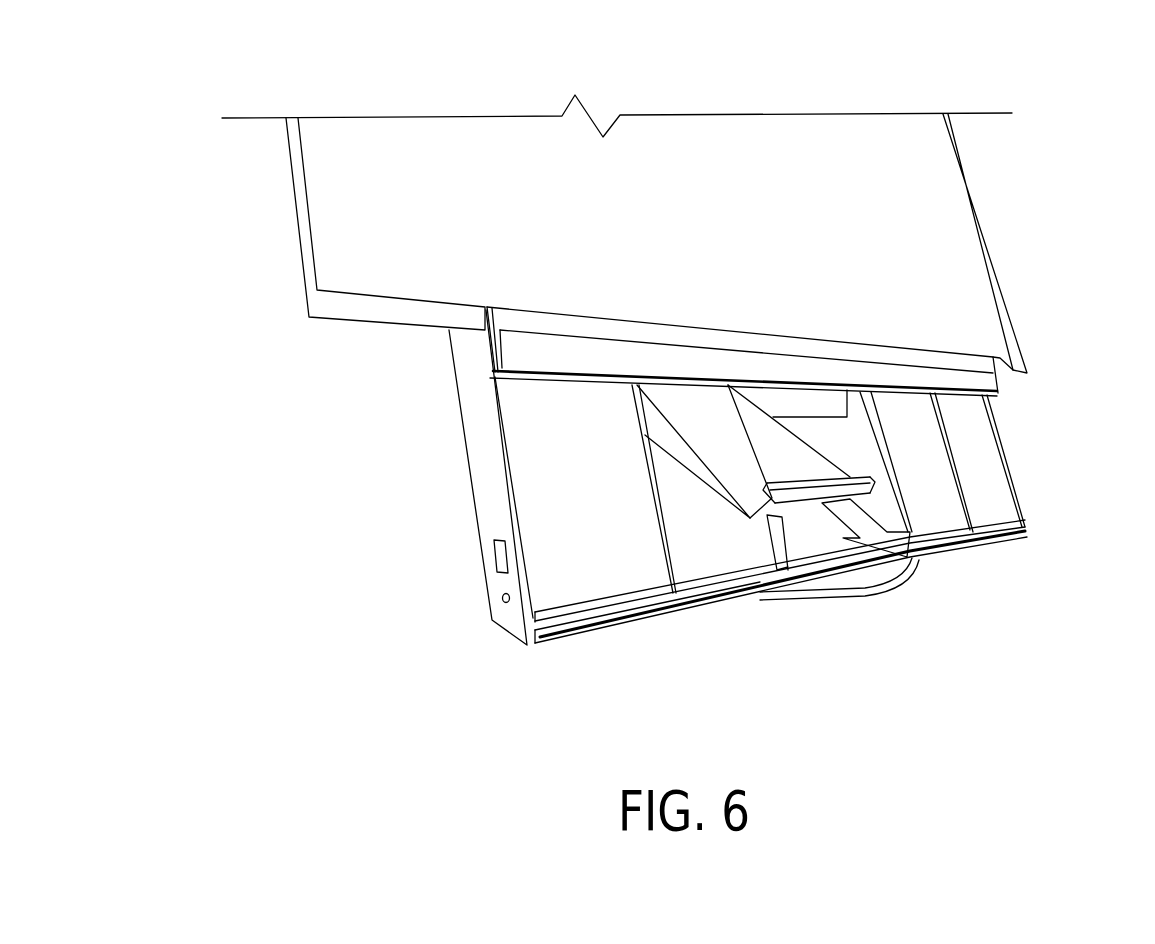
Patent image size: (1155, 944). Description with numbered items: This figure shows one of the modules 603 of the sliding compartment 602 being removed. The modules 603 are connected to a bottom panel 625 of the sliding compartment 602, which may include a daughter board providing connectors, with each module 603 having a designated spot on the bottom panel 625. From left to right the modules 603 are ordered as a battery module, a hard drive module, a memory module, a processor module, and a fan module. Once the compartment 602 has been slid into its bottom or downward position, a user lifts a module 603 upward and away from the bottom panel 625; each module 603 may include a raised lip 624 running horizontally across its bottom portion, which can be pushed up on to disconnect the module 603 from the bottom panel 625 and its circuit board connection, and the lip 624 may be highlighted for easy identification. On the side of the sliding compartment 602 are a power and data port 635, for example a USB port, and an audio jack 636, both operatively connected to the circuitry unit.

The sliding compartment 602 is at (445, 380).
The module 603 is at (540, 445).
The raised lip 624 is at (609, 597).
The bottom panel 625 is at (718, 583).
The power and data port 635 is at (494, 553).
The audio jack 636 is at (496, 603).